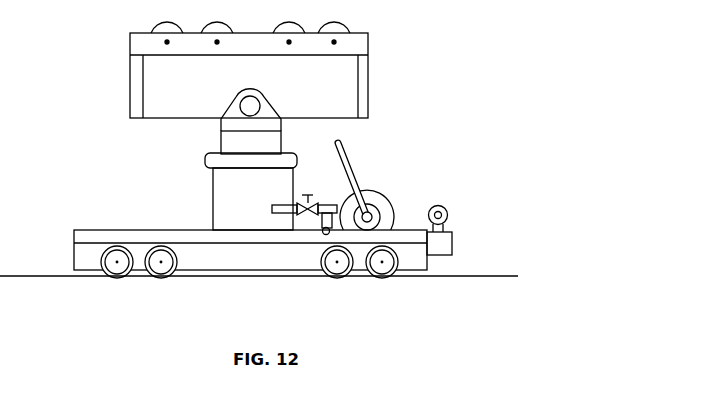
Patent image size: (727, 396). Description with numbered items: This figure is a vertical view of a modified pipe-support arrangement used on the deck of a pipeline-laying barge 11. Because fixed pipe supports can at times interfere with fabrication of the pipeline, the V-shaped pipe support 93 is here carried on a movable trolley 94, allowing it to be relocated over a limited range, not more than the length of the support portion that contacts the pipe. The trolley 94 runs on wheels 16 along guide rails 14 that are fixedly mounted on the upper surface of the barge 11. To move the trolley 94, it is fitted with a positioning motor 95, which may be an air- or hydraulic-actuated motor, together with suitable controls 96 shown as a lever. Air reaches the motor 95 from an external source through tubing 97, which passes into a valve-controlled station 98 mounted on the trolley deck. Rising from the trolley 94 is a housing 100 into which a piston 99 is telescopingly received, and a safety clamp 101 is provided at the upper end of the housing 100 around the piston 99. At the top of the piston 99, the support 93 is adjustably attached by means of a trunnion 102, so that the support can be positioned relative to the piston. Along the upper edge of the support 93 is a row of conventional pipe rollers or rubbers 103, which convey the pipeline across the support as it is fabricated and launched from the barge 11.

The pipeline-laying barge 11 is at (33, 304).
The rails 14 is at (61, 275).
The wheels 16 is at (112, 277).
The V-shaped pipe support 93 is at (369, 72).
The movable trolley 94 is at (125, 230).
The positioning motor 95 is at (389, 196).
The controls 96 is at (350, 161).
The tubing 97 is at (322, 236).
The valve-controlled station 98 is at (316, 204).
The piston 99 is at (262, 150).
The housing 100 is at (268, 198).
The safety clamp 101 is at (220, 163).
The trunnion 102 is at (259, 99).
The pipe rollers or rubbers 103 is at (289, 19).